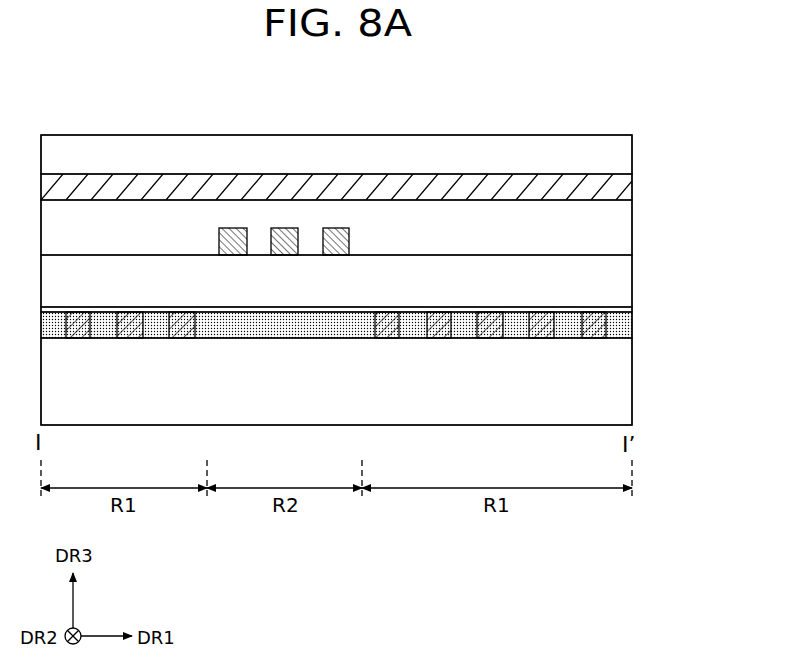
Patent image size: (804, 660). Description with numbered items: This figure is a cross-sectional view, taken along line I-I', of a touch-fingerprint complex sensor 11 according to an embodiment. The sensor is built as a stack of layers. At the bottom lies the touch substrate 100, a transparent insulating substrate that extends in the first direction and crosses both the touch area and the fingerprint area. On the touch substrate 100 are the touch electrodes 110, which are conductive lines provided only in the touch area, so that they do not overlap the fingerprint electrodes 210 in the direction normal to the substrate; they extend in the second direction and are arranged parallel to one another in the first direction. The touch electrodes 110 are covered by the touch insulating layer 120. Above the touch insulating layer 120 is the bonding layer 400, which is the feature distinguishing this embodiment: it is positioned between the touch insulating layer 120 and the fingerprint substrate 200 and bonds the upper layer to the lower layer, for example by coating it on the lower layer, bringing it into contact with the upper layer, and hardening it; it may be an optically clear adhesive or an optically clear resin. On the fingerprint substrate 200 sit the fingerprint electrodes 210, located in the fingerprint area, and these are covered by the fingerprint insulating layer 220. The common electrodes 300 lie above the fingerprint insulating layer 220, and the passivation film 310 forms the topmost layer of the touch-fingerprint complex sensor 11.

The touch-fingerprint complex sensor 11 is at (622, 92).
The touch substrate 100 is at (623, 382).
The touch electrodes 110 is at (595, 338).
The touch insulating layer 120 is at (623, 326).
The bonding layer 400 is at (628, 309).
The fingerprint substrate 200 is at (623, 282).
The fingerprint electrodes 210 is at (285, 228).
The fingerprint insulating layer 220 is at (623, 230).
The common electrodes 300 is at (623, 189).
The passivation film 310 is at (623, 155).